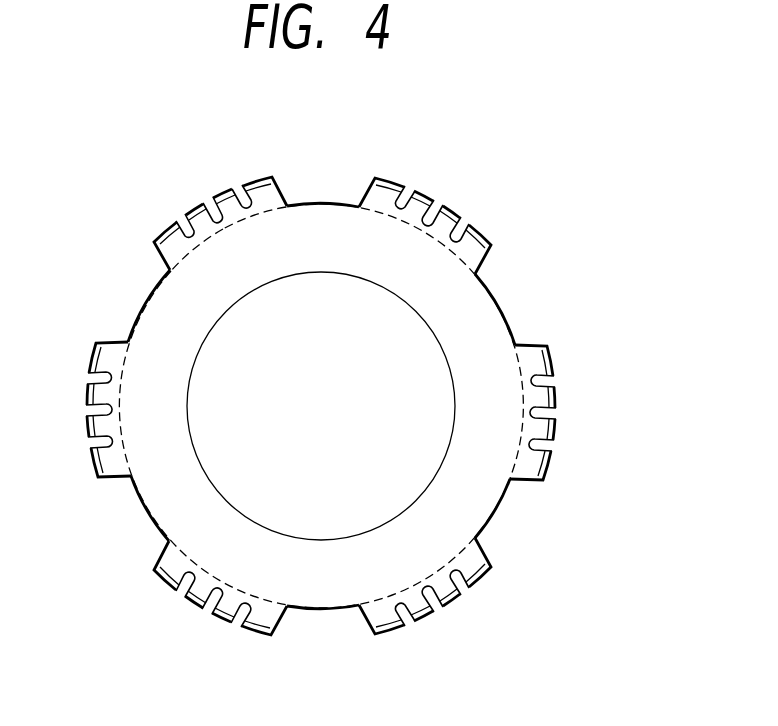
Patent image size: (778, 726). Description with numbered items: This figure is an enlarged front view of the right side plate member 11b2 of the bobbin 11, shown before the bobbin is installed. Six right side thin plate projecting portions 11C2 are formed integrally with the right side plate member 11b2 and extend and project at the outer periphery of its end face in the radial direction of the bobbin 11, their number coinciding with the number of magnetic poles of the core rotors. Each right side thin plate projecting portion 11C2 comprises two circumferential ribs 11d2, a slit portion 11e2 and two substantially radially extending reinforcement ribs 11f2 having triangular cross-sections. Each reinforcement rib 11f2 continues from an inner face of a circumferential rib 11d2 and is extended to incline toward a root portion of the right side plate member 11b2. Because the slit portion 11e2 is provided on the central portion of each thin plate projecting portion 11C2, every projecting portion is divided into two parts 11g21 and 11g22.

The bobbin 11 is at (147, 324).
The right side plate member 11b2 is at (157, 483).
The right side thin plate projecting portion 11C2 is at (152, 258).
The circumferential rib 11d2 is at (253, 177).
The slit portion 11e2 is at (208, 203).
The reinforcement rib 11f2 is at (189, 221).
The part of thin plate projecting portion 11g21 is at (177, 250).
The part of thin plate projecting portion 11g22 is at (265, 202).